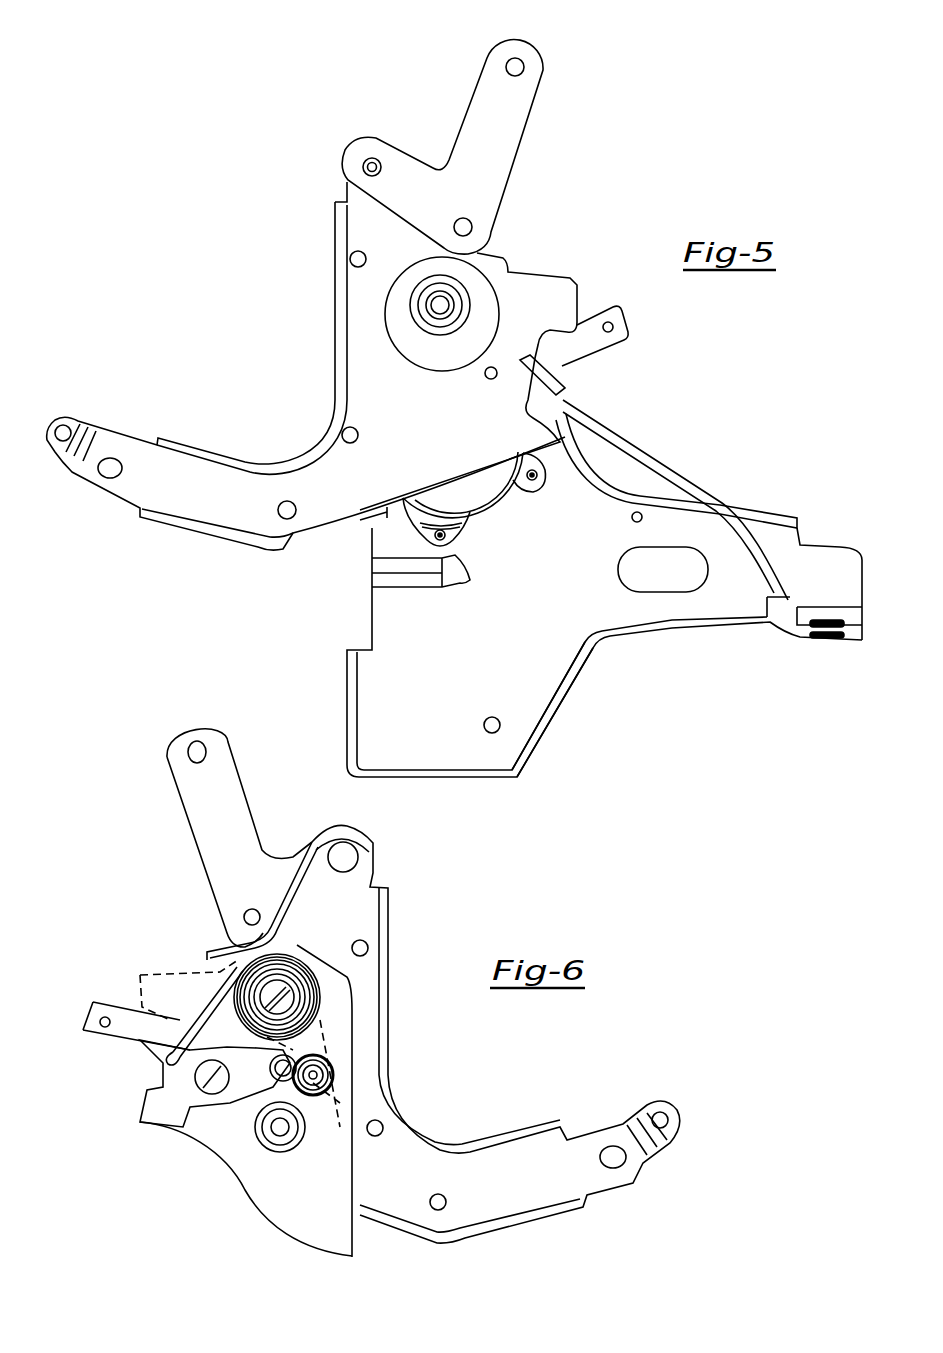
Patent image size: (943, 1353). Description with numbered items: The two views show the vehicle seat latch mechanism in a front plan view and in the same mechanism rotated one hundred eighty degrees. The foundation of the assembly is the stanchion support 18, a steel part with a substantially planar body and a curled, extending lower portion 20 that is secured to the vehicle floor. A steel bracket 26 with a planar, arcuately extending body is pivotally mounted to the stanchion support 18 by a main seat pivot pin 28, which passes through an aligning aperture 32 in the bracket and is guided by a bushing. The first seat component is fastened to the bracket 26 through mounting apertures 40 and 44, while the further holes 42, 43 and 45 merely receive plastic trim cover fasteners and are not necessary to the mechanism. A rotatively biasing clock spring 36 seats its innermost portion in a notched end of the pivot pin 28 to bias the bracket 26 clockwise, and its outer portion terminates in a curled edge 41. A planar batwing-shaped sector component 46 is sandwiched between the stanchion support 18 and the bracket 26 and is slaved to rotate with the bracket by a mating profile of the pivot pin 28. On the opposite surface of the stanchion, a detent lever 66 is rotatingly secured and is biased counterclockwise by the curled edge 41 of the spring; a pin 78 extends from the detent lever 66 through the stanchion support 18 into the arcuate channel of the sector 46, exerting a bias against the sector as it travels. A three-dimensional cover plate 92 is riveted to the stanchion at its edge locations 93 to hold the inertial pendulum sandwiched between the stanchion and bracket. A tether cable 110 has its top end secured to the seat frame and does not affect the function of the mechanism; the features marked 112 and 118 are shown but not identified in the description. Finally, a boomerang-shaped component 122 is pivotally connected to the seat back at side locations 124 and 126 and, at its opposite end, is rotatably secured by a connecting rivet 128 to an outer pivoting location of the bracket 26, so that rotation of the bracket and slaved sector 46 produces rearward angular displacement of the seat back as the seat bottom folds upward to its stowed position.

In FIG. 5, the stanchion support 18 is at (515, 647).
In FIG. 5, the lower portion 20 is at (583, 690).
In FIG. 5, the bracket 26 is at (346, 420).
In FIG. 6, the main seat pivot pin 28 is at (368, 1003).
In FIG. 5, the aperture 32 is at (450, 298).
In FIG. 6, the clock spring 36 is at (290, 978).
In FIG. 5, the mounting aperture 40 is at (287, 519).
In FIG. 6, the mounting aperture 40 is at (436, 1208).
In FIG. 6, the curled edge 41 is at (163, 1050).
In FIG. 5, the hole 42 is at (358, 436).
In FIG. 5, the hole 43 is at (68, 426).
In FIG. 6, the hole 43 is at (664, 1116).
In FIG. 5, the mounting aperture 44 is at (115, 477).
In FIG. 6, the mounting aperture 44 is at (612, 1148).
In FIG. 5, the hole 45 is at (350, 258).
In FIG. 6, the hole 45 is at (366, 946).
In FIG. 6, the sector component 46 is at (192, 993).
In FIG. 6, the detent lever 66 is at (200, 1122).
In FIG. 6, the pin 78 is at (257, 1092).
In FIG. 5, the cover plate 92 is at (457, 490).
In FIG. 5, the edge locations 93 is at (532, 481).
In FIG. 5, the tether cable 110 is at (652, 452).
In FIG. 5, the cable end fitting 112 is at (828, 620).
In FIG. 5, the cable sheath 118 is at (555, 400).
In FIG. 5, the boomerang shaped component 122 is at (508, 144).
In FIG. 6, the boomerang shaped component 122 is at (244, 852).
In FIG. 5, the side location 124 is at (470, 223).
In FIG. 6, the side location 124 is at (248, 917).
In FIG. 5, the side location 126 is at (525, 65).
In FIG. 6, the side location 126 is at (196, 743).
In FIG. 5, the connecting rivet 128 is at (368, 161).